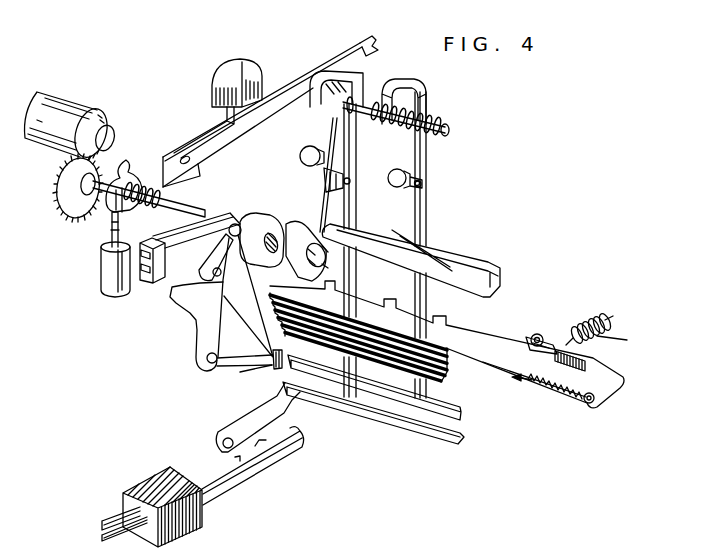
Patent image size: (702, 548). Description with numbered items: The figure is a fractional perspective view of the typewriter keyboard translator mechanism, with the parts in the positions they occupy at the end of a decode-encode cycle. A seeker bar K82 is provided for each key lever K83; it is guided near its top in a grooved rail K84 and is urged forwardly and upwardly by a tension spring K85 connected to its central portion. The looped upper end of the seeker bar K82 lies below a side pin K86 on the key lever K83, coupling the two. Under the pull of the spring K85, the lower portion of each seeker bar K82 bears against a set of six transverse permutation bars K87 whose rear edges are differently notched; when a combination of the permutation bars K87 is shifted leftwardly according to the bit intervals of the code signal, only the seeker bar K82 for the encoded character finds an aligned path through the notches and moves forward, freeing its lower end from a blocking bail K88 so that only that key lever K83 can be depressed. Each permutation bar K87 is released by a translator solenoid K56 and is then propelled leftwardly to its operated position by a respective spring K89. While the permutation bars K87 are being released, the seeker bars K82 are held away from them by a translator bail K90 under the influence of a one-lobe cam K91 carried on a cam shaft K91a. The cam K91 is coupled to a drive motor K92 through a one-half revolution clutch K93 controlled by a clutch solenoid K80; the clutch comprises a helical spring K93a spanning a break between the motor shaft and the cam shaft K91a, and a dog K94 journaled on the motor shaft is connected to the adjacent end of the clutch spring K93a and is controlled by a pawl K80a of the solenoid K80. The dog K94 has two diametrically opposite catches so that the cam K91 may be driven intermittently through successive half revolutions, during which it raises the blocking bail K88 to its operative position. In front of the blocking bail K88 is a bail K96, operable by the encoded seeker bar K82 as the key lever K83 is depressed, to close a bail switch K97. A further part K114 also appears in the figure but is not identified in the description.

The translator solenoid K56 is at (613, 316).
The one-half revolution clutch solenoid K80 is at (118, 297).
The pawl K80a is at (110, 234).
The seeker bar K82 is at (356, 150).
The key lever K83 is at (233, 142).
The grooved rail K84 is at (434, 114).
The tension spring K85 is at (400, 190).
The side pin K86 is at (352, 56).
The transverse permutation bars K87 is at (268, 312).
The blocking bail K88 is at (462, 413).
The spring K89 is at (568, 396).
The translator bail K90 is at (522, 232).
The one lobe cam K91 is at (298, 199).
The cam shaft K91a is at (257, 218).
The drive motor K92 is at (112, 62).
The one-half revolution clutch K93 is at (148, 183).
The helical spring K93a is at (160, 196).
The dog K94 is at (100, 218).
The bail K96 is at (402, 416).
The bail switch K97 is at (248, 472).
The terminal block K114 is at (141, 278).